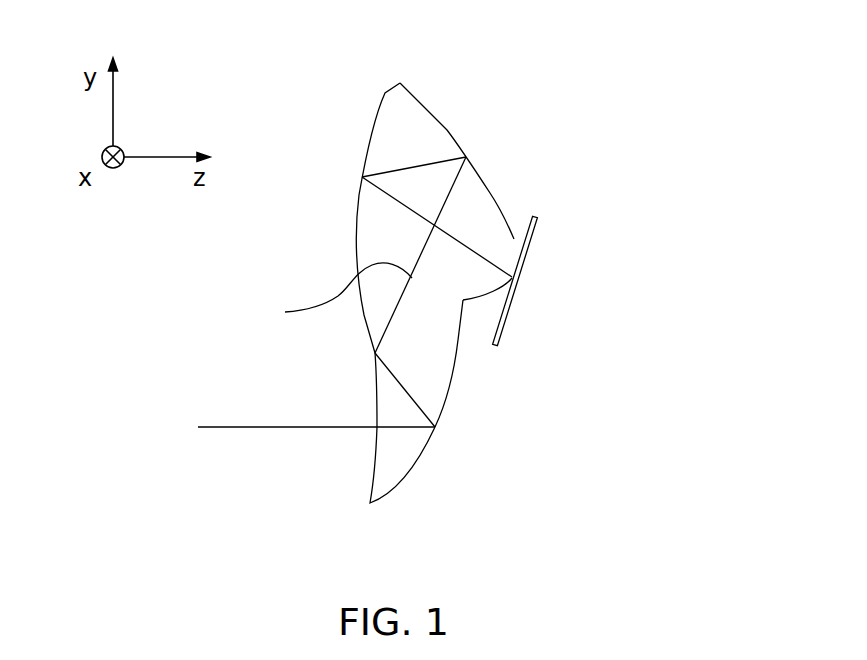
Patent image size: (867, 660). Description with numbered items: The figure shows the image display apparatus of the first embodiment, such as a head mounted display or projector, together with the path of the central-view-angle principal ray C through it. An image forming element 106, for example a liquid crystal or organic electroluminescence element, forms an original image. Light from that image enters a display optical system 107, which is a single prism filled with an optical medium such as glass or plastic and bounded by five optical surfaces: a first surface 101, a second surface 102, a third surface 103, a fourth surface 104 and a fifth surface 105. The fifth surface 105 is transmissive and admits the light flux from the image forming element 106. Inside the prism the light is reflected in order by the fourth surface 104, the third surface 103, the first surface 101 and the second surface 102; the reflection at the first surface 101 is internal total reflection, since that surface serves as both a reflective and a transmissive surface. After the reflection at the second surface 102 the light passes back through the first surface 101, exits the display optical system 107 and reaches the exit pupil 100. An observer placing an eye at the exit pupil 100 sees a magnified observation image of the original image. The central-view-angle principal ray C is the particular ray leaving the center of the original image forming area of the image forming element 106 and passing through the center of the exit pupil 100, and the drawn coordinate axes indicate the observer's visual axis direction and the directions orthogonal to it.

The exit pupil 100 is at (217, 392).
The first surface 101 is at (362, 469).
The second surface 102 is at (458, 407).
The third surface 103 is at (474, 147).
The fourth surface 104 is at (359, 143).
The fifth surface 105 is at (524, 239).
The image forming element 106 is at (531, 281).
The display optical system 107 is at (435, 348).
The central-view-angle principal ray C is at (337, 297).